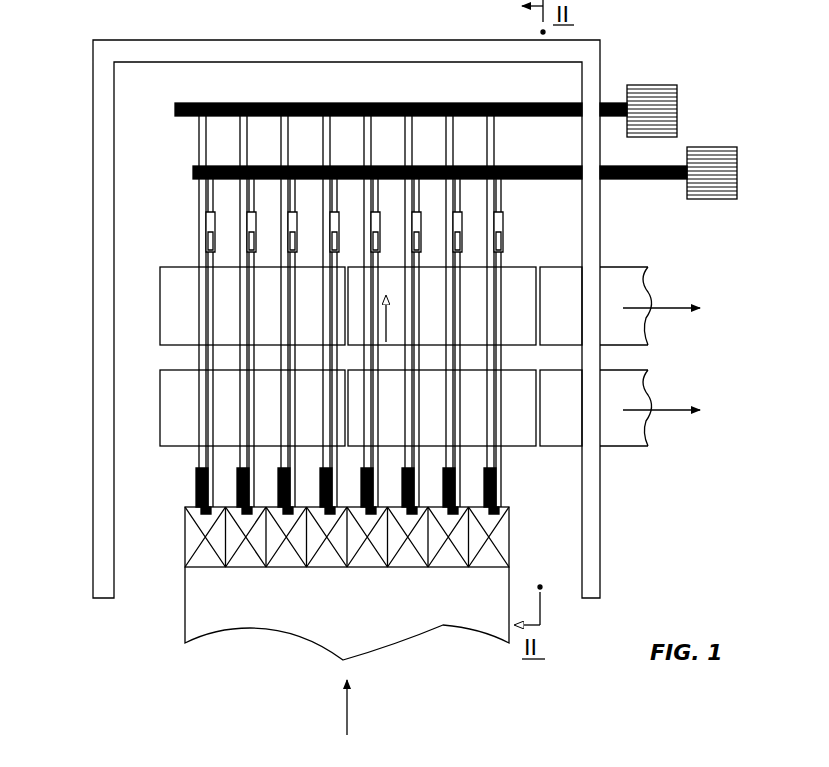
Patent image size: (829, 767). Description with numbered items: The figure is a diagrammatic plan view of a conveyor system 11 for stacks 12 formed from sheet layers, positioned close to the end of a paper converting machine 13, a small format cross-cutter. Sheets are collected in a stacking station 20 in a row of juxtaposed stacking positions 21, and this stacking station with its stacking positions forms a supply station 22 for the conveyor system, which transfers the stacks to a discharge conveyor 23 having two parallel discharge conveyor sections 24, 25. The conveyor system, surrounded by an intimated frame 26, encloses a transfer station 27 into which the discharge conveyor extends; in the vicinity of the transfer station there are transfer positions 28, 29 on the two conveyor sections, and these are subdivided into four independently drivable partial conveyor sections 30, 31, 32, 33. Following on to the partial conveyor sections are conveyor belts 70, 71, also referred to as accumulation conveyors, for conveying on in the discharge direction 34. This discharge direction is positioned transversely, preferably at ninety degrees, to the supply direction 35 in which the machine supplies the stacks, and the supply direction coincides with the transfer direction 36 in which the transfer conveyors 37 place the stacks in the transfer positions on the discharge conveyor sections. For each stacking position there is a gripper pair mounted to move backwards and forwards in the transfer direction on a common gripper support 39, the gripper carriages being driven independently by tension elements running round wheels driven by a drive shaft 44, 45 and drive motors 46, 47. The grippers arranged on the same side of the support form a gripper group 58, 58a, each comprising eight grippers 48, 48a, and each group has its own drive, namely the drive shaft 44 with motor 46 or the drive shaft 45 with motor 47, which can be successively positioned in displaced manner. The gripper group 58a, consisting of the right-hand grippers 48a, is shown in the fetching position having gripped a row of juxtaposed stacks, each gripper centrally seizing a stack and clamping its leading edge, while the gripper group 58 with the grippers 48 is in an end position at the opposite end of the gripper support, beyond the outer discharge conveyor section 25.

The conveyor system 11 is at (634, 52).
The stacks 12 is at (197, 555).
The paper converting machine 13 is at (350, 650).
The stacking station 20 is at (527, 544).
The stacking positions 21 is at (282, 560).
The supply station 22 is at (146, 540).
The discharge conveyor 23 is at (711, 246).
The discharge conveyor section 24 is at (612, 466).
The discharge conveyor section 25 is at (620, 263).
The frame 26 is at (100, 241).
The transfer station 27 is at (130, 345).
The transfer position 28 is at (157, 408).
The transfer position 29 is at (157, 307).
The partial conveyor section 30 is at (524, 437).
The partial conveyor section 31 is at (173, 442).
The partial conveyor section 32 is at (528, 277).
The partial conveyor section 33 is at (175, 269).
The discharge direction 34 is at (668, 312).
The supply direction 35 is at (348, 710).
The transfer direction 36 is at (388, 320).
The transfer conveyors 37 is at (182, 167).
The gripper support 39 is at (495, 361).
The drive shaft 44 is at (627, 181).
The drive shaft 45 is at (561, 118).
The drive motor 46 is at (712, 154).
The drive motor 47 is at (662, 92).
The grippers 48 is at (500, 224).
The grippers 48a is at (492, 496).
The gripper group 58 is at (192, 219).
The gripper group 58a is at (182, 489).
The conveyor belt 70 is at (638, 432).
The conveyor belt 71 is at (651, 280).